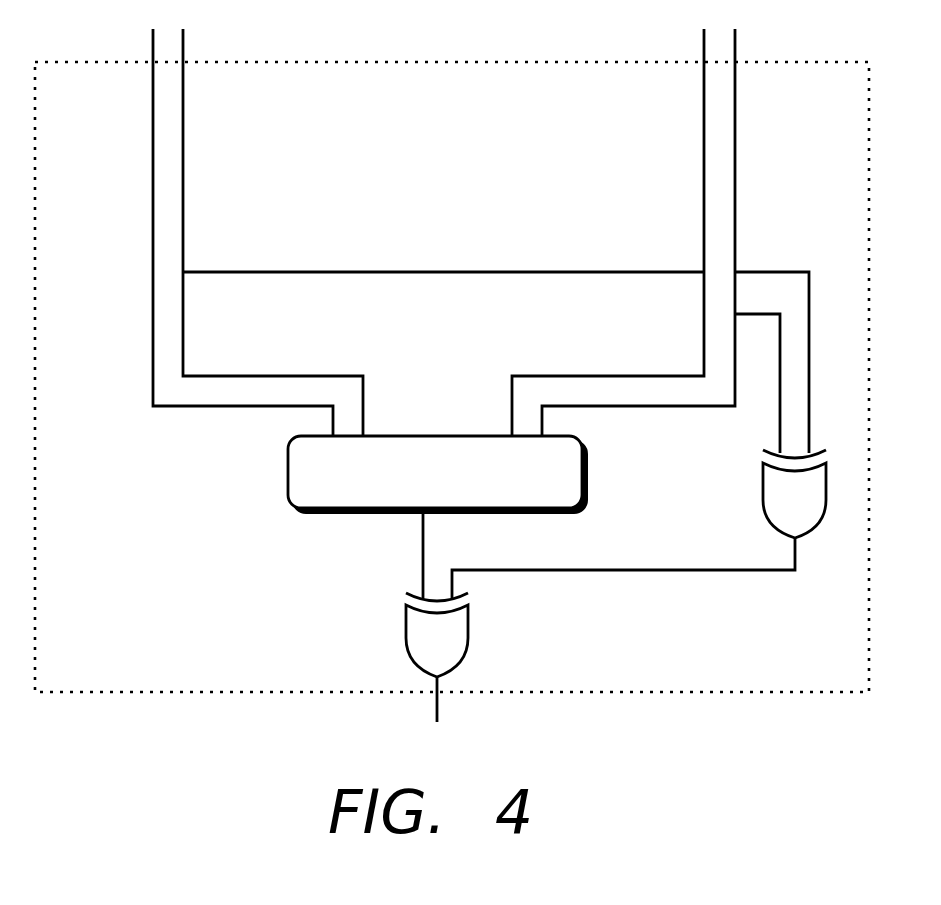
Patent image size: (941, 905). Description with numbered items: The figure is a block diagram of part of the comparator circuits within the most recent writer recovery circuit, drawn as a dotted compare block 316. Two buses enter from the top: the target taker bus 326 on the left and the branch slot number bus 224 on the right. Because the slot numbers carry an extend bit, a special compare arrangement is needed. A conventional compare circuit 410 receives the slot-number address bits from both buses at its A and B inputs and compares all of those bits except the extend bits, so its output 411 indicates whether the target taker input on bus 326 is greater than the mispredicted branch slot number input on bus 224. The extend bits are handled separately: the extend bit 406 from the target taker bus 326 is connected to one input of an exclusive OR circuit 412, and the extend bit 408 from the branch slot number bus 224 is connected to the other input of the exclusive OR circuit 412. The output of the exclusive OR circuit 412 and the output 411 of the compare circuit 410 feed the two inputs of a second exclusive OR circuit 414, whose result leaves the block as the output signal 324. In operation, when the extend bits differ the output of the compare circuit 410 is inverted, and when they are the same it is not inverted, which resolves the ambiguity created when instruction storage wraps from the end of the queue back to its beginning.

The compare block 316 is at (870, 180).
The target taker bus 326 is at (184, 166).
The branch slot number bus 224 is at (736, 180).
The extend bit 406 is at (230, 273).
The extend bit 408 is at (780, 432).
The compare circuit 410 is at (590, 470).
The output 411 is at (423, 555).
The exclusive OR circuit 412 is at (810, 523).
The second exclusive OR circuit 414 is at (467, 625).
The output signal 324 is at (437, 700).